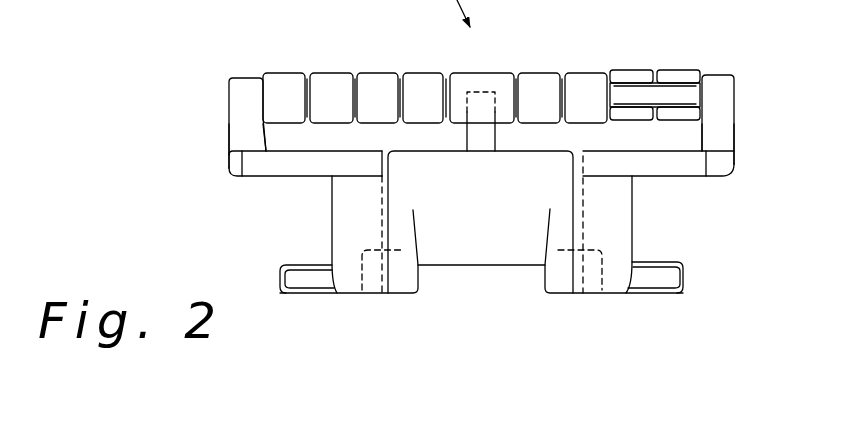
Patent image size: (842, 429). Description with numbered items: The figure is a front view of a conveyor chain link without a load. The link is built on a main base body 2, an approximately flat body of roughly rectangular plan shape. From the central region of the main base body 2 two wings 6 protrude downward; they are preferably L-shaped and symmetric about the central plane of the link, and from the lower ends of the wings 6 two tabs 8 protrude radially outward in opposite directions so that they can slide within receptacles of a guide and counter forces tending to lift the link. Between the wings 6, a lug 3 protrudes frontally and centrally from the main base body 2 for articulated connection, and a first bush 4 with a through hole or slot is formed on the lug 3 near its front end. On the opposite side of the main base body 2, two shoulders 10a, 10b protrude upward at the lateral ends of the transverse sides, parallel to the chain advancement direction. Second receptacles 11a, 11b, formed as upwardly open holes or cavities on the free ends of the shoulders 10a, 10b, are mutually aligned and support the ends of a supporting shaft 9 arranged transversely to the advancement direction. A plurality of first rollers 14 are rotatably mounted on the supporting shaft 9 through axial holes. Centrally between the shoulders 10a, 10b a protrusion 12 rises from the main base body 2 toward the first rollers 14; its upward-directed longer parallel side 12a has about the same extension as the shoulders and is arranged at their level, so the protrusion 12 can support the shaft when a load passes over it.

The main base body 2 is at (303, 166).
The lug 3 is at (448, 183).
The first bush 4 is at (520, 242).
The wings 6 is at (360, 232).
The tabs 8 is at (310, 290).
The supporting shaft 9 is at (672, 92).
The shoulder 10a is at (240, 135).
The shoulder 10b is at (722, 128).
The second receptacle 11a is at (240, 93).
The second receptacle 11b is at (722, 90).
The protrusion 12 is at (465, 137).
The longer parallel side 12a is at (489, 92).
The first rollers 14 is at (373, 92).